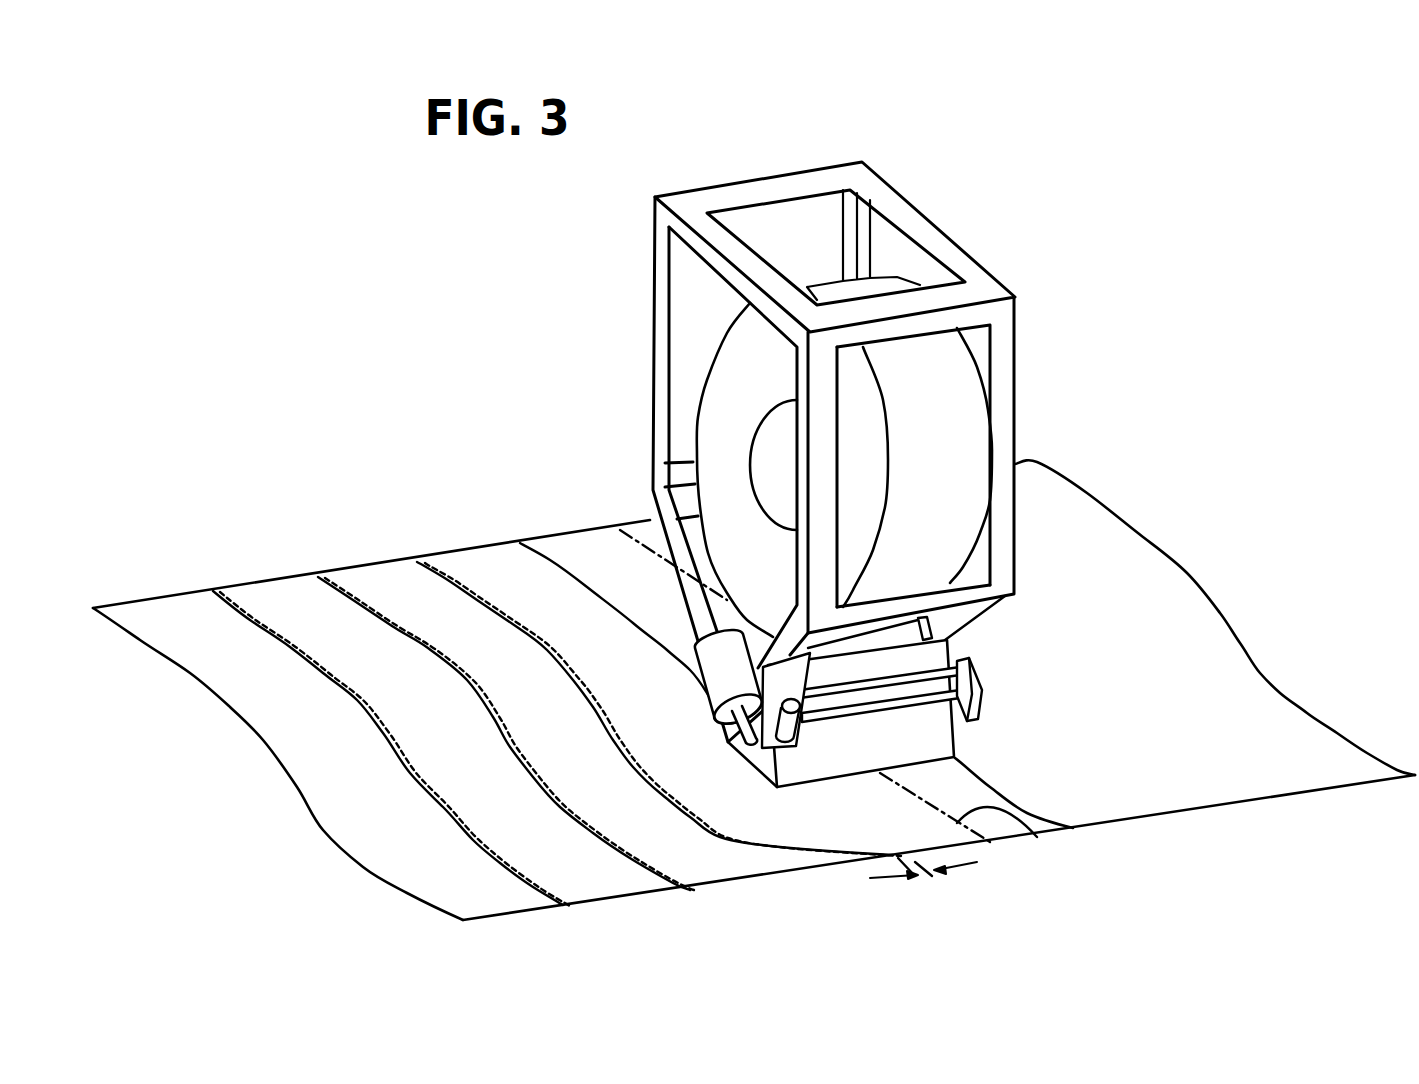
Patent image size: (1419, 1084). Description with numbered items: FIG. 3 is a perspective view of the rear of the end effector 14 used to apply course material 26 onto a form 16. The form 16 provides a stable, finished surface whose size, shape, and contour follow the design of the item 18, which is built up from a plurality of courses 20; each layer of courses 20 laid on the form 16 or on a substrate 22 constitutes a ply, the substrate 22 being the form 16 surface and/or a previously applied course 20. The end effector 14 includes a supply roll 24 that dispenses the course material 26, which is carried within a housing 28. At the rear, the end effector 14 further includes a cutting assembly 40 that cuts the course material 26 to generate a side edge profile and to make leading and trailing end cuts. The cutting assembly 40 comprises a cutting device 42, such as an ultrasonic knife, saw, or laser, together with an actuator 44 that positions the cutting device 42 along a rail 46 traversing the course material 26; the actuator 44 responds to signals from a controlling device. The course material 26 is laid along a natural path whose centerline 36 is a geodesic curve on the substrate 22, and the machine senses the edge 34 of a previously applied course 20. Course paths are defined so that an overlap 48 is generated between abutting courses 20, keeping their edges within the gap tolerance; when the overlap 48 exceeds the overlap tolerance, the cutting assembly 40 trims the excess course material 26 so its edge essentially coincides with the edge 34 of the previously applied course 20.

The end effector 14 is at (867, 465).
The form 16 is at (1215, 617).
The item 18 is at (285, 855).
The courses 20 is at (387, 578).
The substrate 22 is at (1153, 613).
The supply roll 24 is at (783, 438).
The course material 26 is at (967, 457).
The housing 28 is at (1003, 347).
The edge 34 is at (560, 563).
The centerline 36 is at (1037, 837).
The cutting assembly 40 is at (978, 675).
The cutting device 42 is at (800, 690).
The actuator 44 is at (722, 665).
The rail 46 is at (957, 714).
The overlap 48 is at (933, 873).